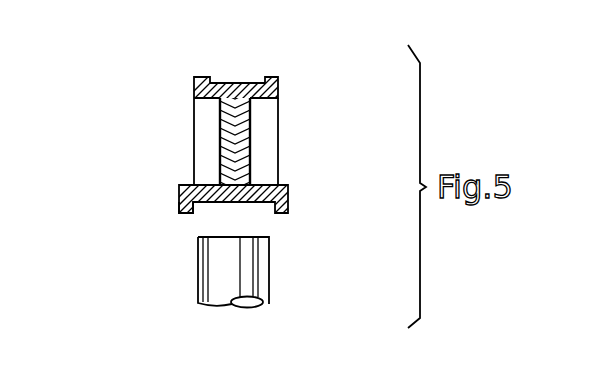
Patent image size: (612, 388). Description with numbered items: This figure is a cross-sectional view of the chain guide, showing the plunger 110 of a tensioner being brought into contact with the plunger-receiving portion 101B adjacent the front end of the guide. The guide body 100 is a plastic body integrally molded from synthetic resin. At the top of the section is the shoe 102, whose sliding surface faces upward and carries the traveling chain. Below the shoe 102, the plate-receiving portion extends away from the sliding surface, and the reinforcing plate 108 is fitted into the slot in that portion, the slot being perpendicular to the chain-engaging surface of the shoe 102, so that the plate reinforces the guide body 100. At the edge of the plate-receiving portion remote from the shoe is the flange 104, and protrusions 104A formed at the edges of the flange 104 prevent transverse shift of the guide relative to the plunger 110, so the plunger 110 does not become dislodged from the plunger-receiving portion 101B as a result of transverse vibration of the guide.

The guide body 100 is at (232, 131).
The shoe 102 is at (196, 81).
The flange 104 is at (196, 186).
The protrusions 104A is at (183, 200).
The plunger-receiving portion 101B is at (185, 222).
The reinforcing plate 108 is at (250, 151).
The plunger 110 is at (262, 268).